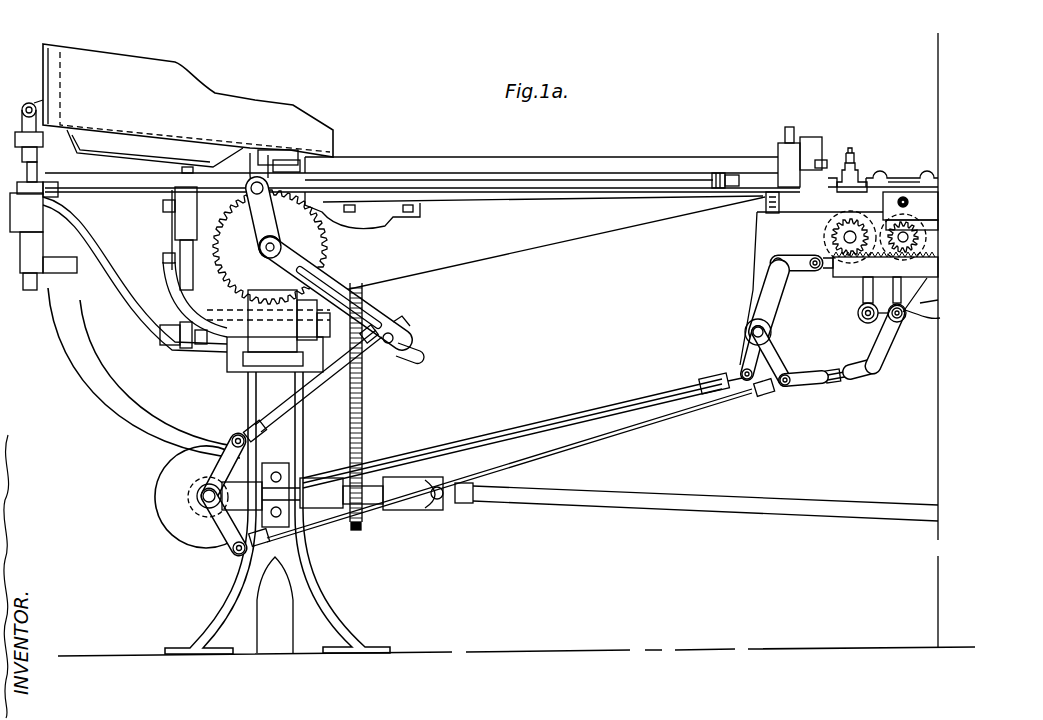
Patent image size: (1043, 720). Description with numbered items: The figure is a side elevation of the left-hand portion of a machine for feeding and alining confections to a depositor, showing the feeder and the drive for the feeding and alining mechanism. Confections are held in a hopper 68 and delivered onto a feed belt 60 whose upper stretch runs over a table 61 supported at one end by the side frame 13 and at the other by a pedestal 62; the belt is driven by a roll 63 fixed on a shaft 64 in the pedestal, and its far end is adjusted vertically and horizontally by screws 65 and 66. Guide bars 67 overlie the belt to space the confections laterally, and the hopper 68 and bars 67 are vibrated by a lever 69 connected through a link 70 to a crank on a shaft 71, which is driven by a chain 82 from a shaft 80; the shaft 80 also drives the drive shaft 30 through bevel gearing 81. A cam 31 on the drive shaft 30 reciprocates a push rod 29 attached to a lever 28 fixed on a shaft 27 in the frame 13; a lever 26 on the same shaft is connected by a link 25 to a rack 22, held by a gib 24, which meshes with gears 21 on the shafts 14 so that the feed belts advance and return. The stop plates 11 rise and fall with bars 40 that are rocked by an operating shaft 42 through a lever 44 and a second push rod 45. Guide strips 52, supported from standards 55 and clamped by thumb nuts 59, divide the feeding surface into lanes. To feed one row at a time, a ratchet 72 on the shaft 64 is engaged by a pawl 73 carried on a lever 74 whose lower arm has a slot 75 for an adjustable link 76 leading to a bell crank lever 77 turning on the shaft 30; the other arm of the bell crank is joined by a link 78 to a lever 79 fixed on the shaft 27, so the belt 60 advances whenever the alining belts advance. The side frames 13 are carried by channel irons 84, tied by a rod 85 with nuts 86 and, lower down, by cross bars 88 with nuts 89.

The stop plate 11 is at (878, 176).
The side frame 13 is at (767, 228).
The shaft 14 is at (848, 237).
The gear 21 is at (843, 237).
The rack 22 is at (938, 262).
The gib 24 is at (927, 270).
The link 25 is at (800, 267).
The lever 26 is at (767, 290).
The shaft 27 is at (755, 332).
The lever 28 is at (747, 358).
The push rod 29 is at (645, 400).
The drive shaft 30 is at (207, 500).
The cam 31 is at (177, 520).
The bar 40 is at (920, 305).
The operating shaft 42 is at (857, 313).
The lever 44 is at (880, 349).
The push rod 45 is at (515, 432).
The guide strip 52 is at (896, 178).
The standard 55 is at (866, 176).
The thumb nut 59 is at (851, 153).
The feed belt 60 is at (533, 250).
The table 61 is at (557, 196).
The pedestal 62 is at (283, 438).
The roll 63 is at (330, 250).
The shaft 64 is at (282, 220).
The screw 65 is at (778, 152).
The screw 66 is at (716, 172).
The guide bar 67 is at (415, 165).
The hopper 68 is at (215, 108).
The lever 69 is at (172, 227).
The link 70 is at (168, 340).
The shaft 71 is at (278, 322).
The ratchet 72 is at (270, 247).
The pawl 73 is at (270, 178).
The lever 74 is at (295, 262).
The slot 75 is at (417, 340).
The link 76 is at (314, 386).
The bell crank lever 77 is at (210, 547).
The link 78 is at (545, 455).
The lever 79 is at (776, 361).
The shaft 80 is at (490, 503).
The bevel gearing 81 is at (222, 487).
The chain 82 is at (358, 431).
The channel iron 84 is at (909, 203).
The rod 85 is at (910, 208).
The nut 86 is at (910, 199).
The cross bar 88 is at (933, 355).
The nut 89 is at (905, 318).